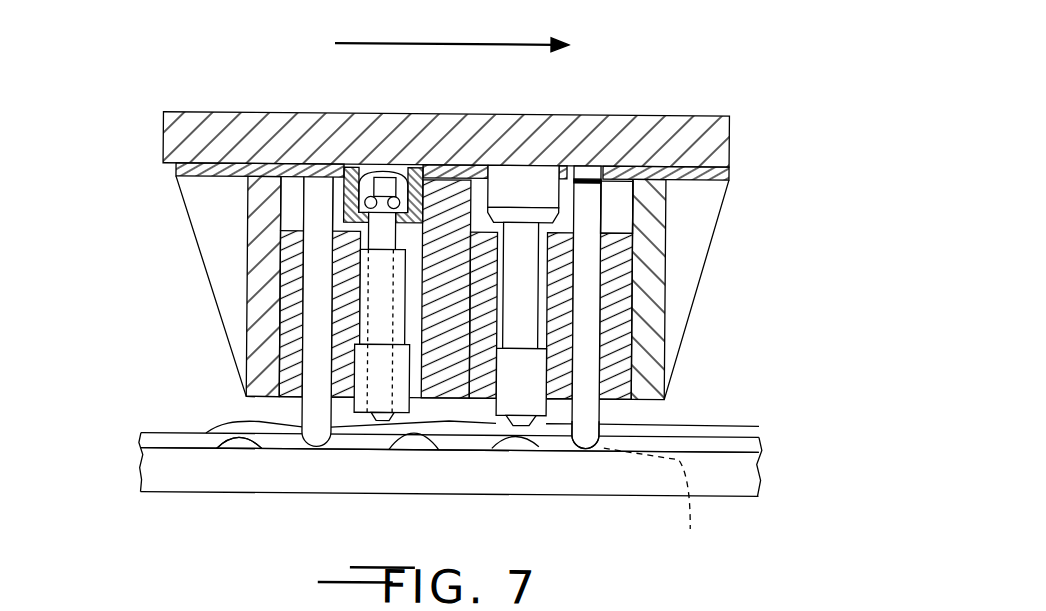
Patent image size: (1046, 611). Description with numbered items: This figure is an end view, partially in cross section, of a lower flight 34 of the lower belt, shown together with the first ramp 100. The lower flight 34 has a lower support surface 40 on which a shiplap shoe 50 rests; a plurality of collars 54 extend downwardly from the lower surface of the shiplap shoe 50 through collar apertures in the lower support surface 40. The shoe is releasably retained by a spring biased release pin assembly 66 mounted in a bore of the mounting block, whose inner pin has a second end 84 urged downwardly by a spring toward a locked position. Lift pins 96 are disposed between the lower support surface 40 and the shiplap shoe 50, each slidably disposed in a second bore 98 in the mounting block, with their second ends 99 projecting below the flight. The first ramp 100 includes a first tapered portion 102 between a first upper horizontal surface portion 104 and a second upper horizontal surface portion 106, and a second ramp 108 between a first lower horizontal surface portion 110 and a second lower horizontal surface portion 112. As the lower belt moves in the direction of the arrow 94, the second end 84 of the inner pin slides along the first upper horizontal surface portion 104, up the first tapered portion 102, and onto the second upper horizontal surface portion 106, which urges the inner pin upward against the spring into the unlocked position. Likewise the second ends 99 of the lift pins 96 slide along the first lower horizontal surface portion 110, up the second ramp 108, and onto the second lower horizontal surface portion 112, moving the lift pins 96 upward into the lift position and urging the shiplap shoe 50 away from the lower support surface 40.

The lower flight 34 is at (315, 74).
The lower support surface 40 is at (254, 114).
The shiplap shoe 50 is at (652, 114).
The collar 54 is at (530, 192).
The spring biased release pin assembly 66 is at (416, 228).
The second end of the inner pin 84 is at (383, 420).
The arrow 94 is at (443, 44).
The lift pin 96 is at (587, 208).
The second bore 98 is at (592, 252).
The second end of the lift pin 99 is at (586, 452).
The first ramp 100 is at (118, 446).
The first tapered portion 102 is at (293, 427).
The first upper horizontal surface portion 104 is at (175, 435).
The second upper horizontal surface portion 106 is at (672, 432).
The second ramp 108 is at (388, 450).
The first lower horizontal surface portion 110 is at (220, 441).
The second lower horizontal surface portion 112 is at (517, 425).